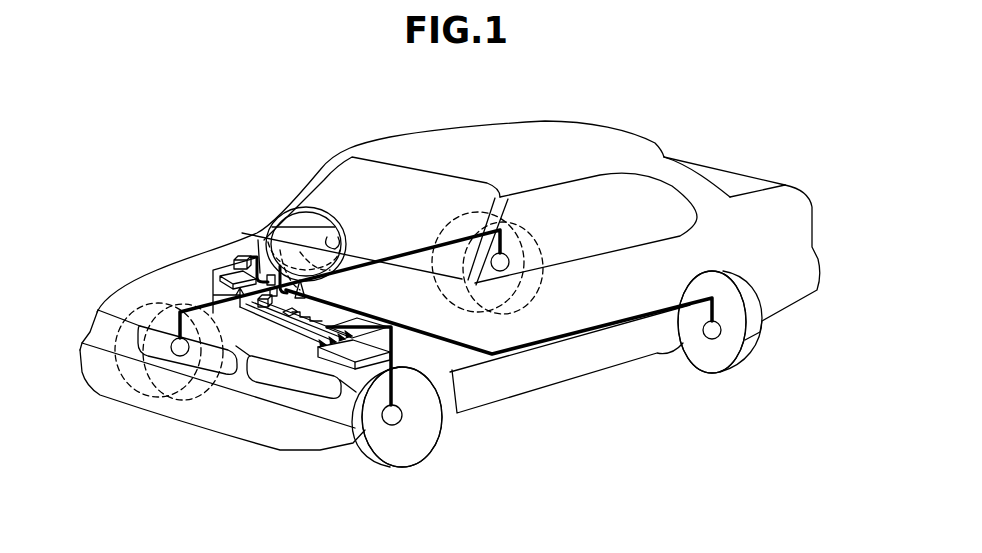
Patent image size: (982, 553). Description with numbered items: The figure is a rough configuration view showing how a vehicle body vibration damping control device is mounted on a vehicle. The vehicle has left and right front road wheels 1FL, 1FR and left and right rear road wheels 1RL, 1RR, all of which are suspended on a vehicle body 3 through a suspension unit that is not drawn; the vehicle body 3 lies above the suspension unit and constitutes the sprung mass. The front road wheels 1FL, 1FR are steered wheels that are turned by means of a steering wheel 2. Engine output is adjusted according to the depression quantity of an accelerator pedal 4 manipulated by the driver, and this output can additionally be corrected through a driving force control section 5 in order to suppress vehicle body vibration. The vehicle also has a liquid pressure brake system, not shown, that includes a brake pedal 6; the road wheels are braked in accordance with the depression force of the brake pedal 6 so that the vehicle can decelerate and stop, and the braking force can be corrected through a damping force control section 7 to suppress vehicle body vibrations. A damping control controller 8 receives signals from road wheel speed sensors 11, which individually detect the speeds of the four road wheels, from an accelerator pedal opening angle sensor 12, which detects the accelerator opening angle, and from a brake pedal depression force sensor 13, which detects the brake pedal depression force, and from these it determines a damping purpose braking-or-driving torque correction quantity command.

The right front road wheel 1FR is at (149, 397).
The left front road wheel 1FL is at (432, 438).
The right rear road wheel 1RR is at (533, 240).
The left rear road wheel 1RL is at (750, 347).
The steering wheel 2 is at (333, 213).
The vehicle body 3 is at (580, 137).
The accelerator pedal 4 is at (266, 262).
The driving force control section 5 is at (236, 272).
The brake pedal 6 is at (306, 293).
The damping force control section 7 is at (290, 288).
The damping control controller 8 is at (318, 358).
The road wheel speed sensor 11 is at (184, 356).
The accelerator pedal opening angle sensor 12 is at (240, 256).
The brake pedal depression force sensor 13 is at (258, 240).